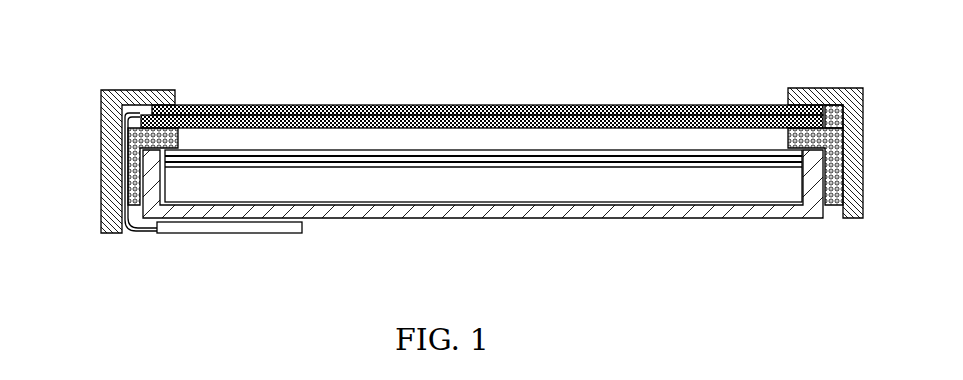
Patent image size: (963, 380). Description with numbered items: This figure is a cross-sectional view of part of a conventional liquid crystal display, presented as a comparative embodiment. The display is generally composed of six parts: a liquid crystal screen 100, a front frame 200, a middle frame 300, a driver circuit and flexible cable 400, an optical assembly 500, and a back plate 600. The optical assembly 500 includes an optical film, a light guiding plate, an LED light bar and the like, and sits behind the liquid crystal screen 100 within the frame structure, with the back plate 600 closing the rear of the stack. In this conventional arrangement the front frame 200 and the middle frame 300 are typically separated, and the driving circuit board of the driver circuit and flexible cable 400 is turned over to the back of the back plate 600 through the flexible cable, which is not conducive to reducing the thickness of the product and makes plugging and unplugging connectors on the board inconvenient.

The liquid crystal screen 100 is at (197, 105).
The front frame 200 is at (108, 118).
The middle frame 300 is at (118, 192).
The driver circuit and flexible cable 400 is at (187, 230).
The optical assembly 500 is at (275, 188).
The back plate 600 is at (655, 205).